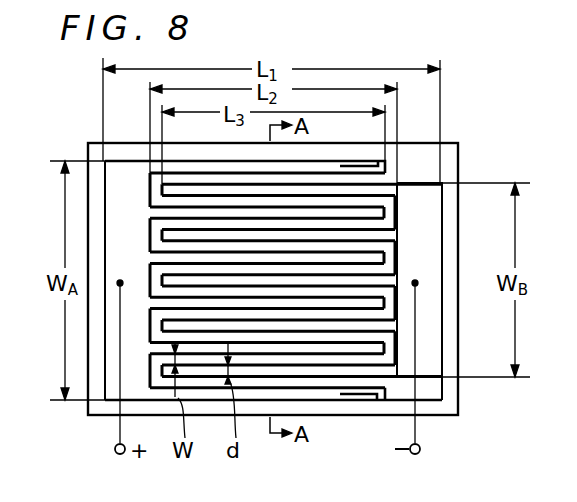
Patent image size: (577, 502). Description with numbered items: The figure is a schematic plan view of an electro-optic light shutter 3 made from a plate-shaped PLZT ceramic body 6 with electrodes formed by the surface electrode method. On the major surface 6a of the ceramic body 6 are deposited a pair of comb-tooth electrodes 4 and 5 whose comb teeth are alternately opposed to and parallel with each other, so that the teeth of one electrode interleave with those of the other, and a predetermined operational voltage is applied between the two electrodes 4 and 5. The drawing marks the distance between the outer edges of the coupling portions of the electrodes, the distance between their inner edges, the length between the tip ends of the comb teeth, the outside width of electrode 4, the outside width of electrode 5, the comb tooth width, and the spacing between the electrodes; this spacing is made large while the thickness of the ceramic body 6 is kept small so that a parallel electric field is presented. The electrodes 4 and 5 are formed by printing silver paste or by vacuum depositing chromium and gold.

The electro-optic light shutter 3 is at (496, 316).
The comb-tooth electrode 4 is at (125, 176).
The comb-tooth electrode 5 is at (442, 388).
The PLZT ceramic body 6 is at (458, 242).
The major surface 6a is at (418, 165).